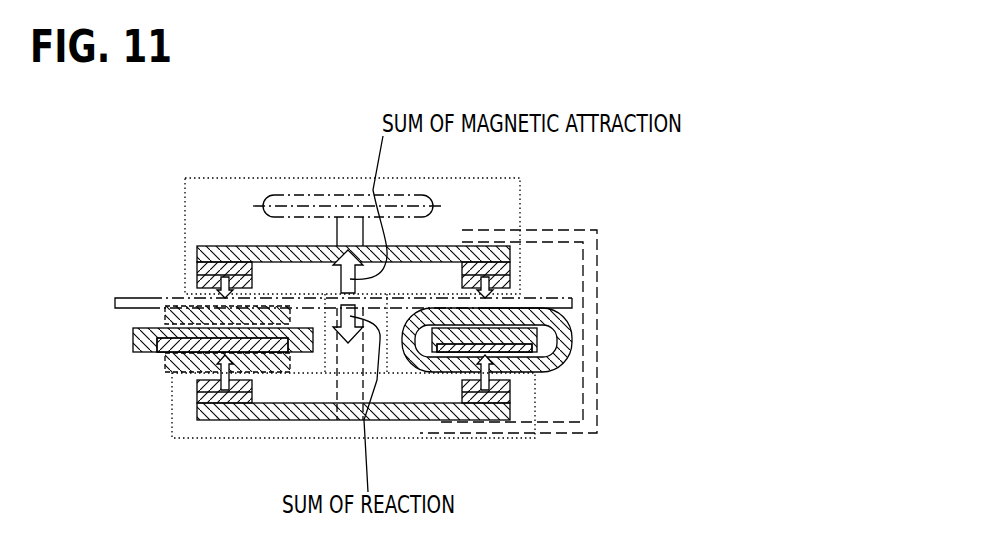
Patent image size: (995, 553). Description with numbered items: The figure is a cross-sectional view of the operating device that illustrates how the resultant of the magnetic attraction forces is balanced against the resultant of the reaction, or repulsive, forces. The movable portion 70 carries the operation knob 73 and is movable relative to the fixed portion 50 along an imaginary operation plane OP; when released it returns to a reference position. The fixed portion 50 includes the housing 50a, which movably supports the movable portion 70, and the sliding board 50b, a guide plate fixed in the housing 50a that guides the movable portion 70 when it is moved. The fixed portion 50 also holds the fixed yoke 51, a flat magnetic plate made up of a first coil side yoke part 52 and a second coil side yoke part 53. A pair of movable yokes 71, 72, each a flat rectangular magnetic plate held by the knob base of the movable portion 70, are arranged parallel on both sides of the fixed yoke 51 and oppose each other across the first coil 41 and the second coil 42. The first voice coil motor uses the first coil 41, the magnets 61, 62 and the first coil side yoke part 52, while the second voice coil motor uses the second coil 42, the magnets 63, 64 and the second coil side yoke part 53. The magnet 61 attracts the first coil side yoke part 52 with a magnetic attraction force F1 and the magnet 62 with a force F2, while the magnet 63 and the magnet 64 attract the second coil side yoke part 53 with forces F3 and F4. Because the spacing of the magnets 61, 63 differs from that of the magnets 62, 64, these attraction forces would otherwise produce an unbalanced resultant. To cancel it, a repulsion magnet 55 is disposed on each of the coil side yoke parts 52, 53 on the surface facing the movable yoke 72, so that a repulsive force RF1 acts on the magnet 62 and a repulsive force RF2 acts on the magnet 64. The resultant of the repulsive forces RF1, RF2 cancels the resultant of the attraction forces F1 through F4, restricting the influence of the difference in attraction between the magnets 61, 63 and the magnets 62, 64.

The first coil 41 is at (543, 368).
The second coil 42 is at (268, 375).
The fixed portion 50 is at (597, 300).
The housing 50a is at (343, 303).
The sliding board 50b is at (570, 325).
The fixed yoke 51 is at (537, 333).
The first coil side yoke part 52 is at (484, 348).
The second coil side yoke part 53 is at (133, 338).
The repulsion magnet 55 is at (548, 360).
The magnet 61 is at (508, 279).
The magnet 62 is at (512, 403).
The magnet 63 is at (197, 279).
The magnet 64 is at (197, 386).
The movable portion 70 is at (225, 177).
The movable yoke 71 is at (197, 252).
The movable yoke 72 is at (197, 411).
The operation knob 73 is at (292, 195).
The operation plane OP is at (328, 217).
The magnetic attraction force F1 is at (463, 280).
The magnetic attraction force F2 is at (458, 385).
The magnetic attraction force F3 is at (222, 279).
The magnetic attraction force F4 is at (211, 392).
The repulsive force RF1 is at (470, 353).
The repulsive force RF2 is at (226, 356).